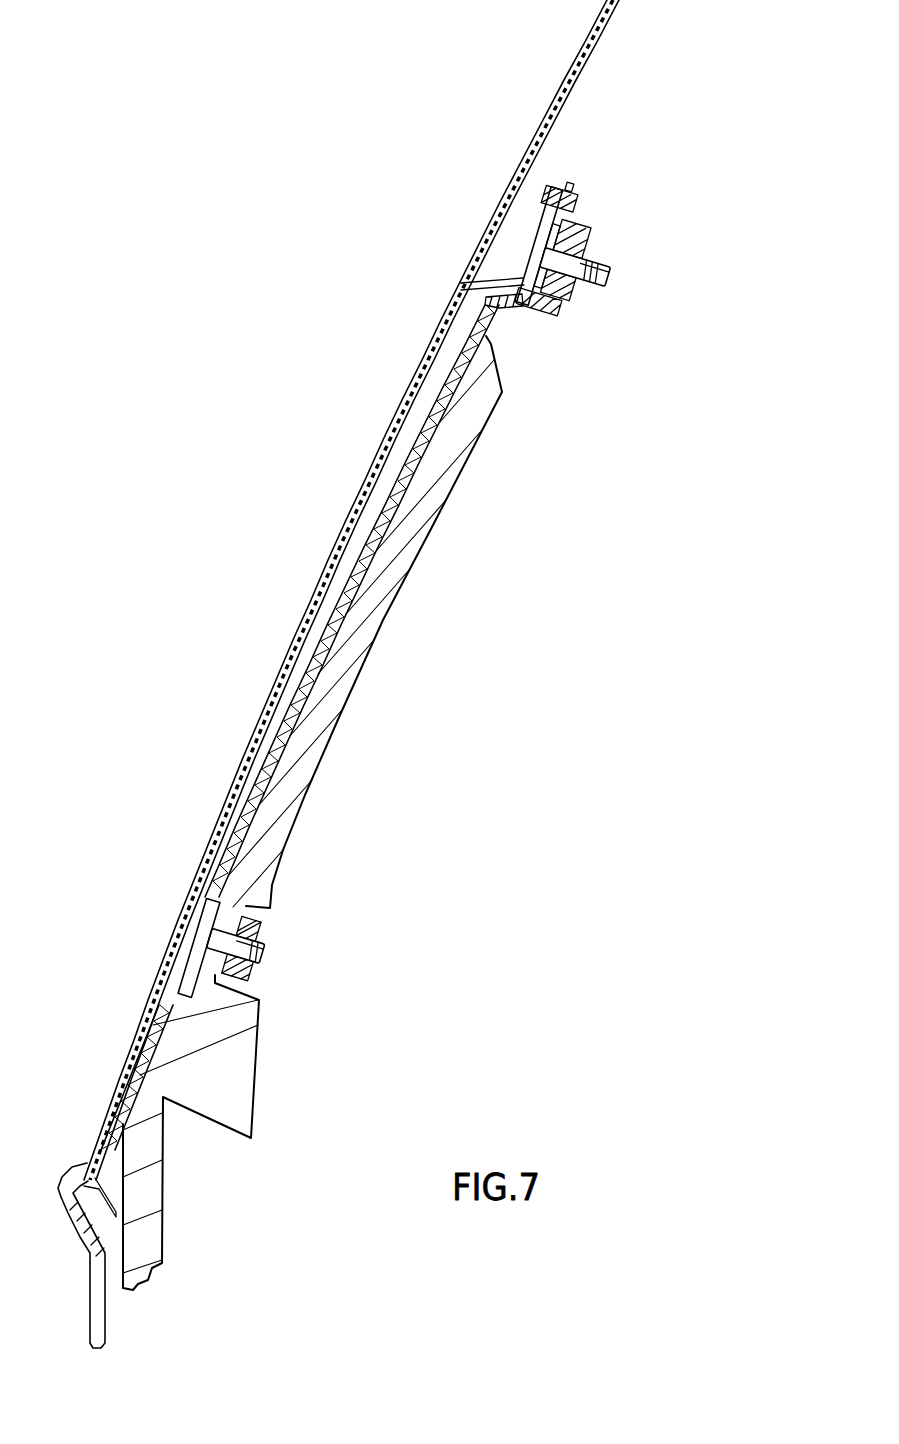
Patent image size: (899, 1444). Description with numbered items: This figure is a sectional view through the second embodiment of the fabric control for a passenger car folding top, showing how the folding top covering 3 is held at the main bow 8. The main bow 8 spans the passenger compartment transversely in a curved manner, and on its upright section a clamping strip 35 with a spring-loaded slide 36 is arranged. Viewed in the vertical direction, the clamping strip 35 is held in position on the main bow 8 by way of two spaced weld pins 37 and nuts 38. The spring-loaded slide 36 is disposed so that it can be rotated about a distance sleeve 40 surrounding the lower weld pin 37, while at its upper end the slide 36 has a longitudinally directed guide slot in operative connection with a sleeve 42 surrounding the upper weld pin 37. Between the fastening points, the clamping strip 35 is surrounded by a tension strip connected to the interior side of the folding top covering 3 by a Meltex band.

The folding top covering 3 is at (555, 98).
The main bow 8 is at (397, 585).
The clamping strip 35 is at (491, 276).
The spring-loaded slide 36 is at (521, 304).
The weld pin 37 is at (604, 267).
The nut 38 is at (585, 297).
The distance sleeve 40 is at (200, 897).
The sleeve 42 is at (568, 205).